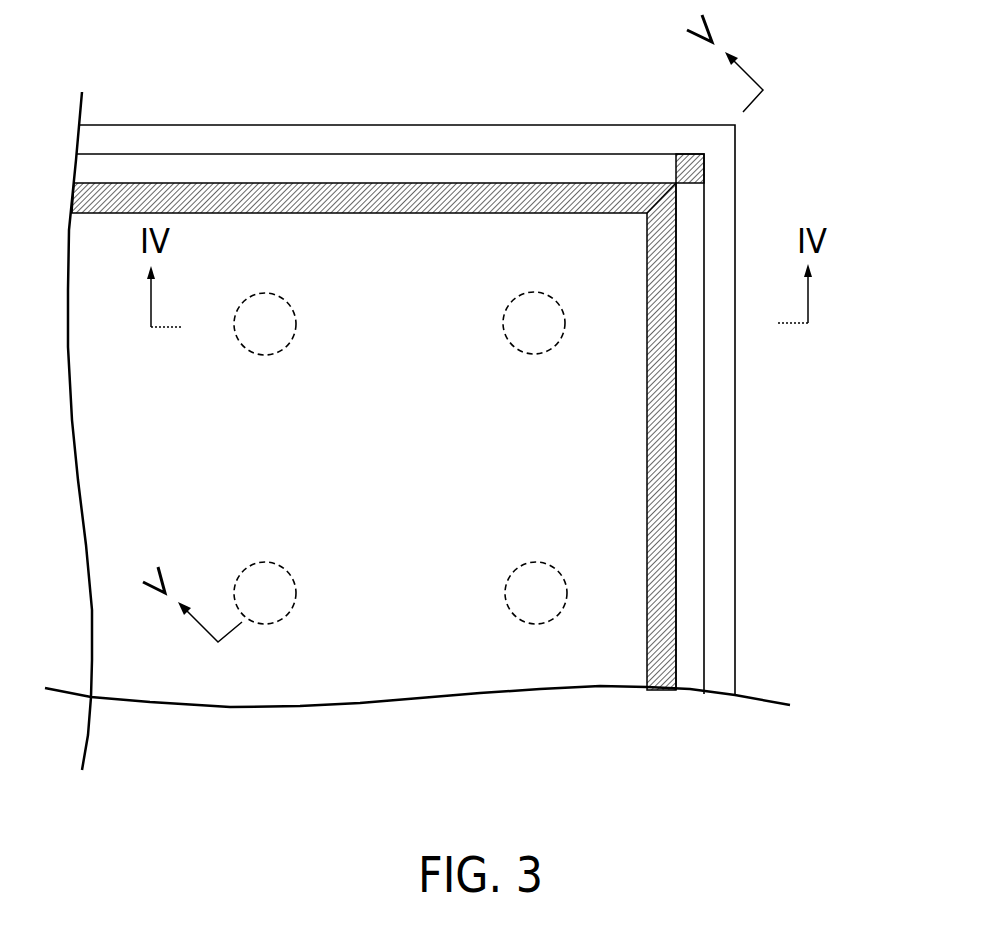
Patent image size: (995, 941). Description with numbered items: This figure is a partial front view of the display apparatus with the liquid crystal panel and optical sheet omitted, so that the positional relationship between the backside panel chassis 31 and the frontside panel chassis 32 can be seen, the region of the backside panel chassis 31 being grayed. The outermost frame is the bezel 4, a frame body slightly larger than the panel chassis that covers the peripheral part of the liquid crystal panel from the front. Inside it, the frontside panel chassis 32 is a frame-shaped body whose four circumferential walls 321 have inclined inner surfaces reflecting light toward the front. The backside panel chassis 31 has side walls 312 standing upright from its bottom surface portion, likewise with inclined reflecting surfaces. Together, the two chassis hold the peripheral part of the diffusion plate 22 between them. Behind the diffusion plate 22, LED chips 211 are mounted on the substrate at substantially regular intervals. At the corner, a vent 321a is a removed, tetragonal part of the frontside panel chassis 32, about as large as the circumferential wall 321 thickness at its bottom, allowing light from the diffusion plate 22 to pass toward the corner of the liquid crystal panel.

The bezel 4 is at (215, 122).
The diffusion plate 22 is at (578, 532).
The backside panel chassis 31 is at (455, 363).
The frontside panel chassis 32 is at (285, 140).
The LED chips 211 is at (283, 353).
The side walls 312 is at (493, 198).
The circumferential walls 321 is at (572, 170).
The vents 321a is at (698, 167).